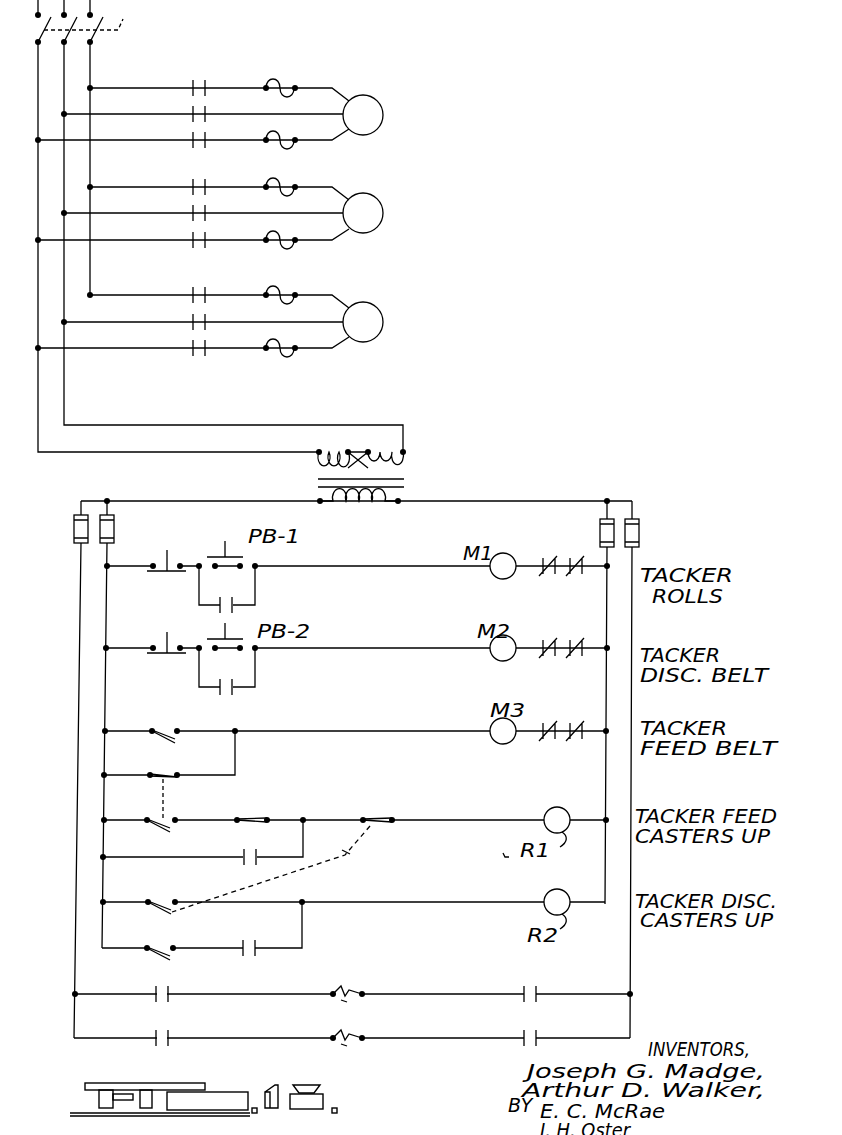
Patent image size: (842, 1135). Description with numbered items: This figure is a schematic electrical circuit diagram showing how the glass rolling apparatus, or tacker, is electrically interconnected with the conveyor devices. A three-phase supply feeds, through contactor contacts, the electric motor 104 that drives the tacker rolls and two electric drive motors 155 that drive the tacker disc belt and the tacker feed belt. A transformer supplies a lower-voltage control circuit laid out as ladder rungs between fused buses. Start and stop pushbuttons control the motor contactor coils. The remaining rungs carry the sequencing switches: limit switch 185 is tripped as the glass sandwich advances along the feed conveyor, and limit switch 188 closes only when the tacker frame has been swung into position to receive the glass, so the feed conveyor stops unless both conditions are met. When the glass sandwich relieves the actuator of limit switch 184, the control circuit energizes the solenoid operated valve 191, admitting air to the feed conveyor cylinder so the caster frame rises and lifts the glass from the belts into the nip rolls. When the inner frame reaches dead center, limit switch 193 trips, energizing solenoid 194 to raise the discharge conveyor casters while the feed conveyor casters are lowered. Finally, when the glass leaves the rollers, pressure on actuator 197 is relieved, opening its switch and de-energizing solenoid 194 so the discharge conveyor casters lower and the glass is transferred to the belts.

The electric motor 104 is at (380, 103).
The electric drive motor 155 is at (397, 298).
The limit switch 188 is at (169, 733).
The limit switch 185 is at (180, 842).
The limit switch 184 is at (263, 817).
The limit switch 193 is at (167, 901).
The actuator 197 is at (171, 949).
The solenoid operated valve 191 is at (349, 990).
The solenoid 194 is at (352, 1035).